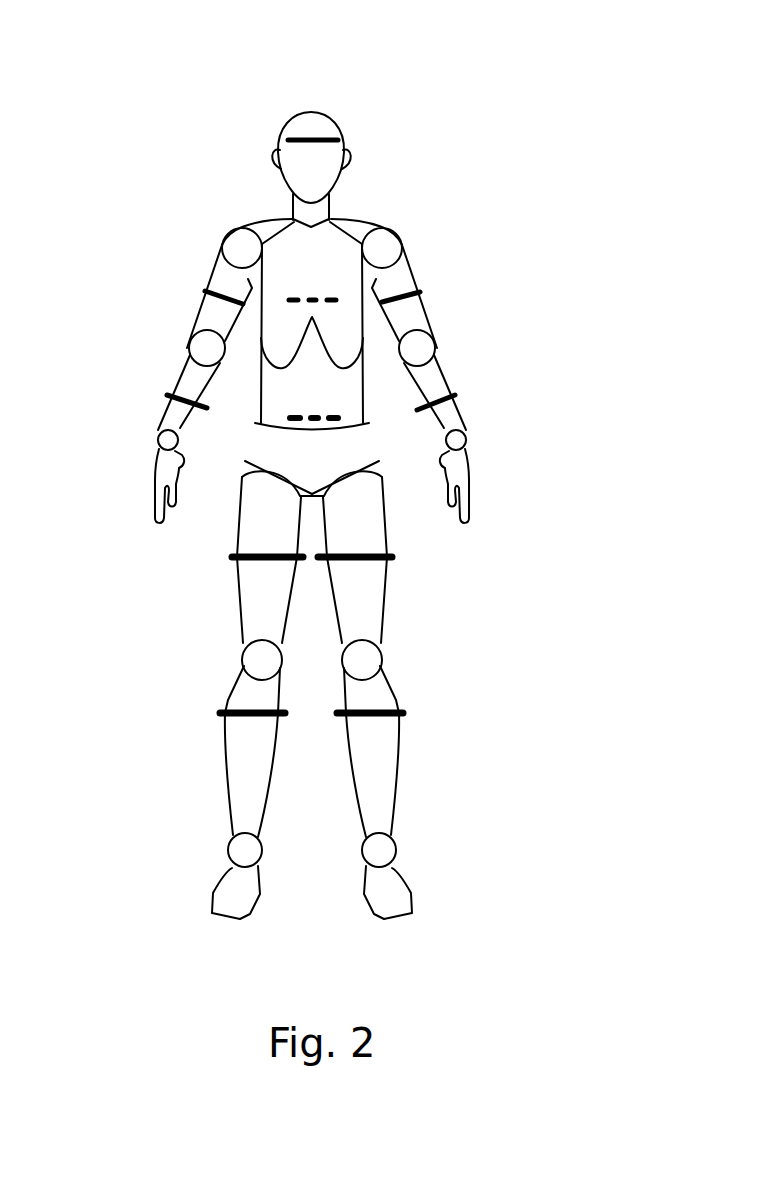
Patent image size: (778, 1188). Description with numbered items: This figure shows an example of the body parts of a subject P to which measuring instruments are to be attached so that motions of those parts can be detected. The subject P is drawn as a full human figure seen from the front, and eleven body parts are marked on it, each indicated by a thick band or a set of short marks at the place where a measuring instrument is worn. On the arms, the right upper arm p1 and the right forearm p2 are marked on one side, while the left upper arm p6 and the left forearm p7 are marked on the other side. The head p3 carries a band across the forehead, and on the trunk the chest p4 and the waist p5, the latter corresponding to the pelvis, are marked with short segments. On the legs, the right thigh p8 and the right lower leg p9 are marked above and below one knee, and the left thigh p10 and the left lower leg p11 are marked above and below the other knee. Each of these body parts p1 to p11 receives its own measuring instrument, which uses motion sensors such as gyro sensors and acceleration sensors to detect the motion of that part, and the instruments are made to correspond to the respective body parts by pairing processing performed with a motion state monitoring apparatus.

The subject P is at (367, 68).
The right upper arm p1 is at (203, 290).
The right forearm p2 is at (165, 393).
The head p3 is at (340, 133).
The chest (trunk) p4 is at (315, 297).
The waist (pelvis) p5 is at (322, 412).
The left upper arm p6 is at (421, 291).
The left forearm p7 is at (456, 395).
The right thigh p8 is at (232, 557).
The right lower leg p9 is at (218, 712).
The left thigh p10 is at (392, 557).
The left lower leg p11 is at (404, 712).